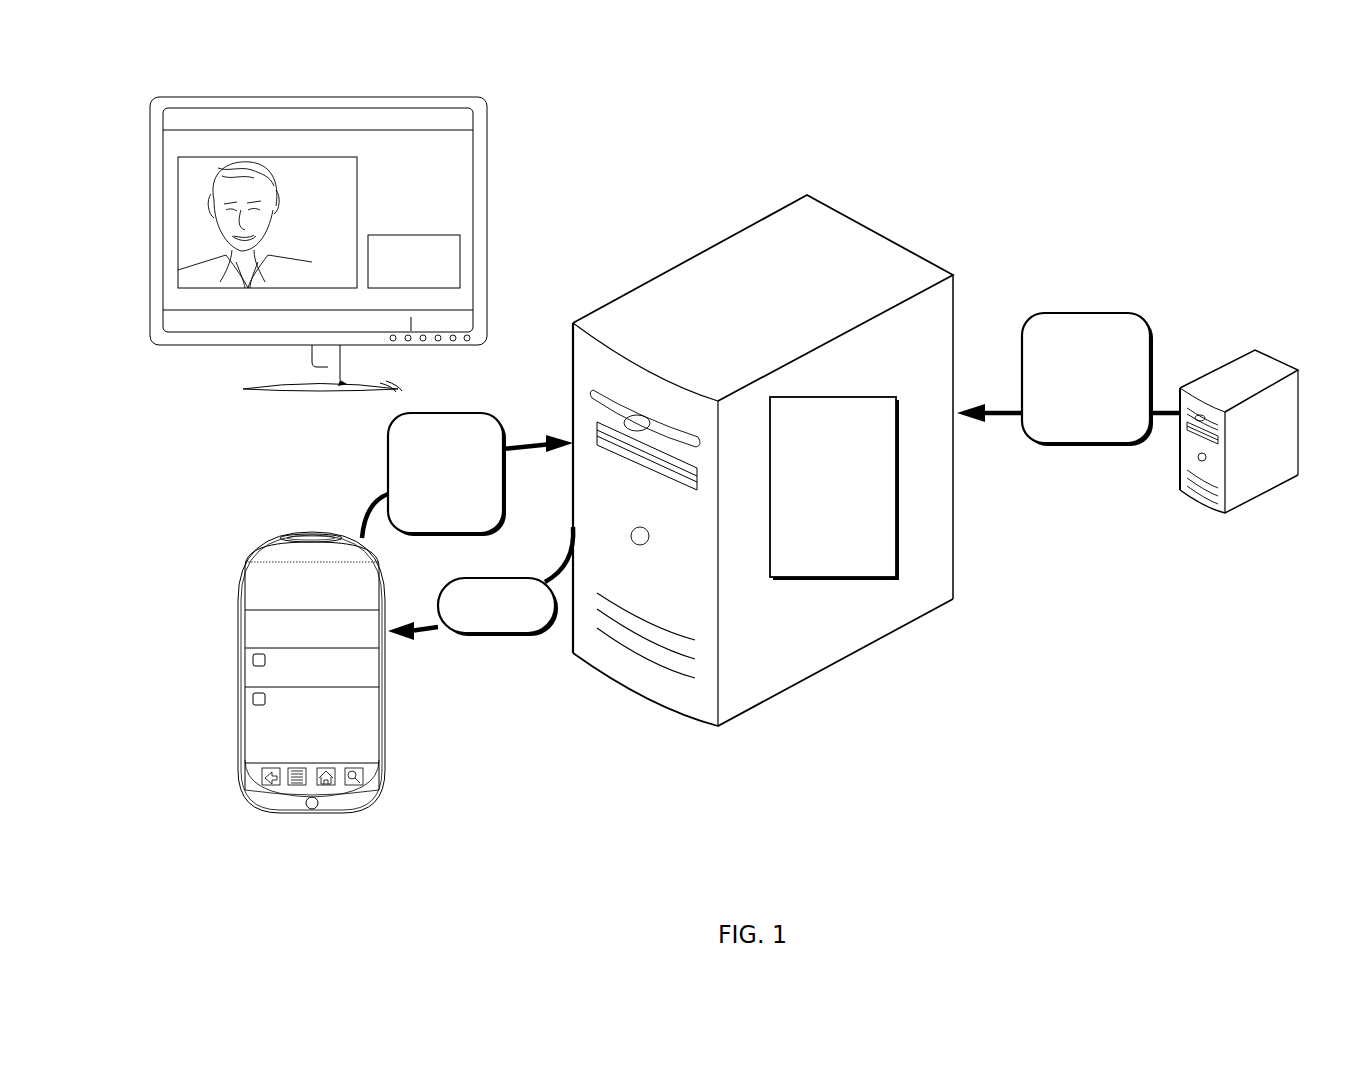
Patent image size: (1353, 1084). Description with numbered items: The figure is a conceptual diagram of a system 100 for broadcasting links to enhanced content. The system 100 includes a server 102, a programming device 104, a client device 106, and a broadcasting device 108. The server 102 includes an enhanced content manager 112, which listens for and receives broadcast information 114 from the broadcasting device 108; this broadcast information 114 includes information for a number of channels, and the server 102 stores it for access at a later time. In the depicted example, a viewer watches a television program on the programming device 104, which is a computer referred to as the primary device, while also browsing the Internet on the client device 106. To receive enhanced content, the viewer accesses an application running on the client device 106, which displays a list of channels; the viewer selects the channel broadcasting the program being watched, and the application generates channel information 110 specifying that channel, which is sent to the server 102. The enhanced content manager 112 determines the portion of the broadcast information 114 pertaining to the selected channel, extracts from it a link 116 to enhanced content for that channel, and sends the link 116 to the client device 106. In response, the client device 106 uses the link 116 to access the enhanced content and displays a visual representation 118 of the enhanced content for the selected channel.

The system 100 is at (1093, 126).
The server 102 is at (763, 460).
The programming device 104 is at (150, 112).
The client device 106 is at (245, 540).
The broadcasting device 108 is at (1246, 350).
The channel information 110 is at (467, 475).
The enhanced content manager 112 is at (834, 488).
The broadcast information 114 is at (1068, 379).
The link to enhanced content 116 is at (480, 583).
The visual representation of enhanced content 118 is at (235, 698).